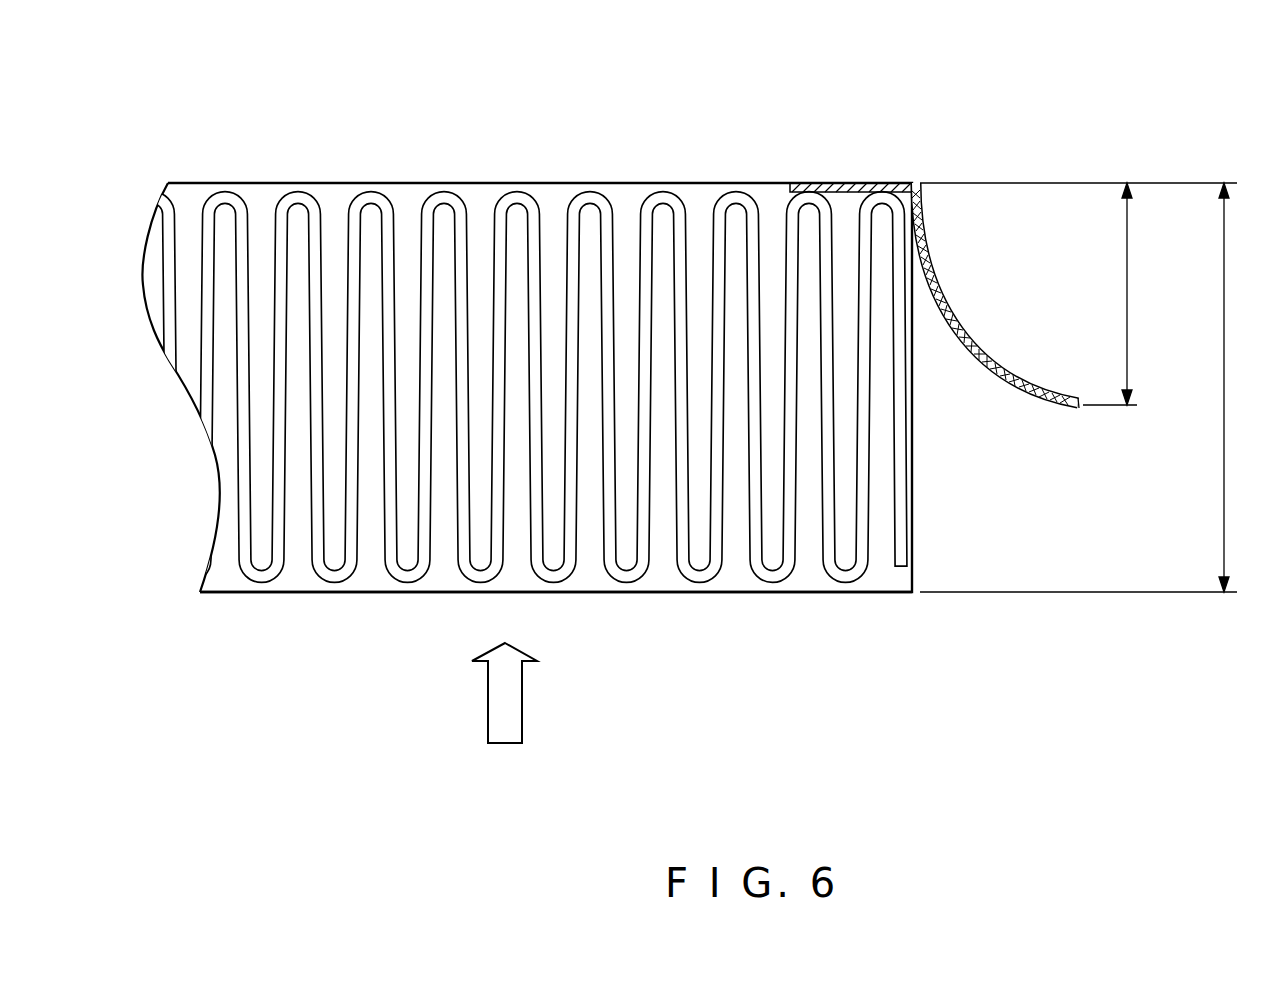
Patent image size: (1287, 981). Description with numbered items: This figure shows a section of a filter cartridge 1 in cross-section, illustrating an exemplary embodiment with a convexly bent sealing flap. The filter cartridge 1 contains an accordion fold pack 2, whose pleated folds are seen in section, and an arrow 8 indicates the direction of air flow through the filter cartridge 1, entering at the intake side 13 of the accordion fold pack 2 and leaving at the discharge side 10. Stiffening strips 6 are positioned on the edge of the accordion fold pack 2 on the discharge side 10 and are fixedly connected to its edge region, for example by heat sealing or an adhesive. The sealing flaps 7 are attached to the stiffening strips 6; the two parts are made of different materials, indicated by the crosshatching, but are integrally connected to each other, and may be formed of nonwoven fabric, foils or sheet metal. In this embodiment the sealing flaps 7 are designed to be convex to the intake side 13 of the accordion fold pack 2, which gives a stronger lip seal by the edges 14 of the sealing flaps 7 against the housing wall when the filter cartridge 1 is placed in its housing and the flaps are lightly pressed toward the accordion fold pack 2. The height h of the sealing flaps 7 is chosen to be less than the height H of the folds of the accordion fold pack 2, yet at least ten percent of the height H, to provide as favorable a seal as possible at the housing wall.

The filter cartridge 1 is at (367, 165).
The accordion fold pack 2 is at (392, 540).
The stiffening strips 6 is at (815, 183).
The sealing flaps 7 is at (990, 352).
The arrow 8 is at (506, 720).
The discharge side 10 is at (258, 183).
The intake side 13 is at (775, 592).
The edges of the sealing flaps 14 is at (1075, 410).
The height of the sealing flaps h is at (1078, 294).
The height of the folds H is at (1090, 387).